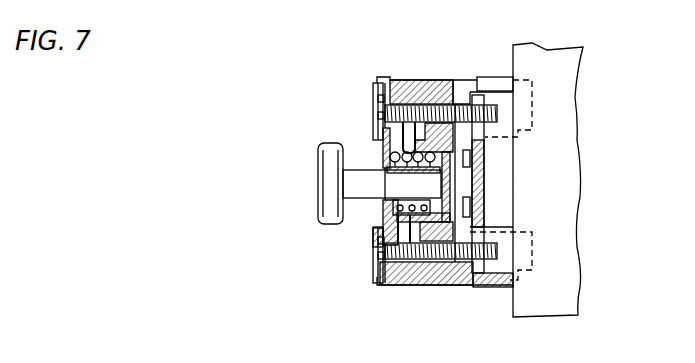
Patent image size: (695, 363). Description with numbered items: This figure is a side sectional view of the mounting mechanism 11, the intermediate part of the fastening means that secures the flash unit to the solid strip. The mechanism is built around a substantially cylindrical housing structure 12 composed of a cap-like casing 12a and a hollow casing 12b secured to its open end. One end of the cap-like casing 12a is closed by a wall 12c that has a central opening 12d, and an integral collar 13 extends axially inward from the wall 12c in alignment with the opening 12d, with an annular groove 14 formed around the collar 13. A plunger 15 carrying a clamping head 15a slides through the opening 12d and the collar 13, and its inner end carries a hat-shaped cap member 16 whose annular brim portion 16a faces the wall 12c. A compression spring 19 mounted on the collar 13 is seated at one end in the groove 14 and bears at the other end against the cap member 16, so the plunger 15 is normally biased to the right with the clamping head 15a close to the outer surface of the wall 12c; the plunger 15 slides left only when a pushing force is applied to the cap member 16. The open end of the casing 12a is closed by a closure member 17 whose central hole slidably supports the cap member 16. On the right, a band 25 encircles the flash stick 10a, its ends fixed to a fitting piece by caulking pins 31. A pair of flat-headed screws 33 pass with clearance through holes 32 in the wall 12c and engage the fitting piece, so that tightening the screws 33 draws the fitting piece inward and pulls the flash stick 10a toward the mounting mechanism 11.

The flash stick 10a is at (562, 290).
The mounting mechanism 11 is at (512, 312).
The housing structure 12 is at (407, 80).
The cap-like casing 12a is at (433, 87).
The hollow casing 12b is at (497, 82).
The wall 12c is at (372, 247).
The central opening 12d is at (372, 222).
The collar 13 is at (410, 270).
The annular groove 14 is at (377, 102).
The plunger 15 is at (352, 183).
The clamping head 15a is at (318, 172).
The cap member 16 is at (455, 263).
The annular brim portion 16a is at (422, 283).
The closure member 17 is at (470, 285).
The compression spring 19 is at (387, 152).
The band 25 is at (480, 144).
The caulking pins 31 is at (485, 155).
The holes 32 is at (390, 77).
The flat-headed screws 33 is at (375, 88).